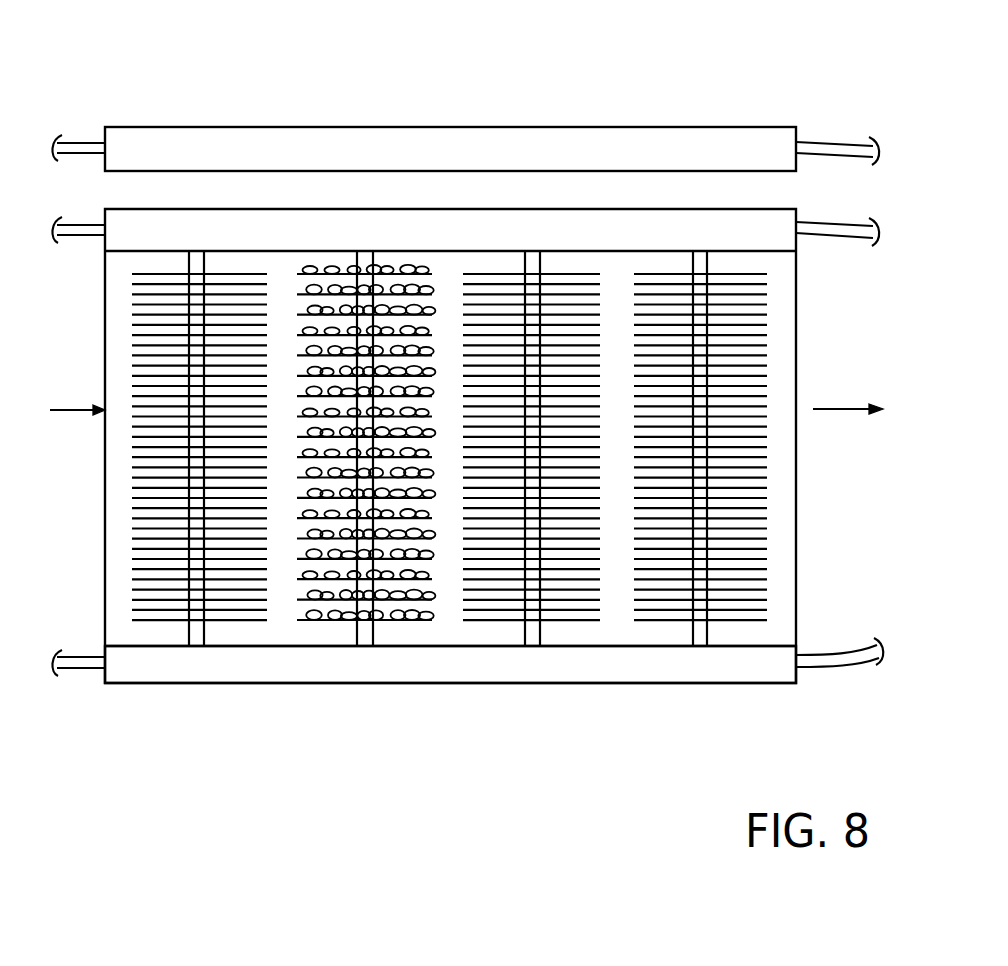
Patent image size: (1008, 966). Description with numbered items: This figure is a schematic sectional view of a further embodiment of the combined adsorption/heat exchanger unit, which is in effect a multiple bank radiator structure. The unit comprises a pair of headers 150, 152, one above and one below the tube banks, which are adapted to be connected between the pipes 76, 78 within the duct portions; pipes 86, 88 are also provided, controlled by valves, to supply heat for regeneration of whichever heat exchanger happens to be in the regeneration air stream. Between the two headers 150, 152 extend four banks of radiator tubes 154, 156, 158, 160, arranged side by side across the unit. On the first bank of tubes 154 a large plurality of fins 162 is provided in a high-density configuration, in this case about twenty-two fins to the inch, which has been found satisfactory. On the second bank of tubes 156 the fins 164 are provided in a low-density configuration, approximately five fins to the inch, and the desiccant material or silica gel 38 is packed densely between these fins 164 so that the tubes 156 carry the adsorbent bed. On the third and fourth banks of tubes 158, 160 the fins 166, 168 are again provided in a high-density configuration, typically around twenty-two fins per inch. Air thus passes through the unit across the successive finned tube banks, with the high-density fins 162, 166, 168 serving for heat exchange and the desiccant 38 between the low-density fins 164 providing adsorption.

The desiccant material or silica gel 38 is at (433, 288).
The pipe 76 is at (73, 221).
The pipe 78 is at (84, 669).
The pipe 86 is at (821, 222).
The pipe 88 is at (830, 654).
The header 150 is at (233, 235).
The header 152 is at (435, 668).
The radiator tubes 154 is at (187, 258).
The radiator tubes 156 is at (355, 263).
The radiator tubes 158 is at (525, 258).
The radiator tubes 160 is at (685, 262).
The fins 162 is at (152, 622).
The fins 164 is at (303, 622).
The fins 166 is at (560, 622).
The fins 168 is at (666, 620).